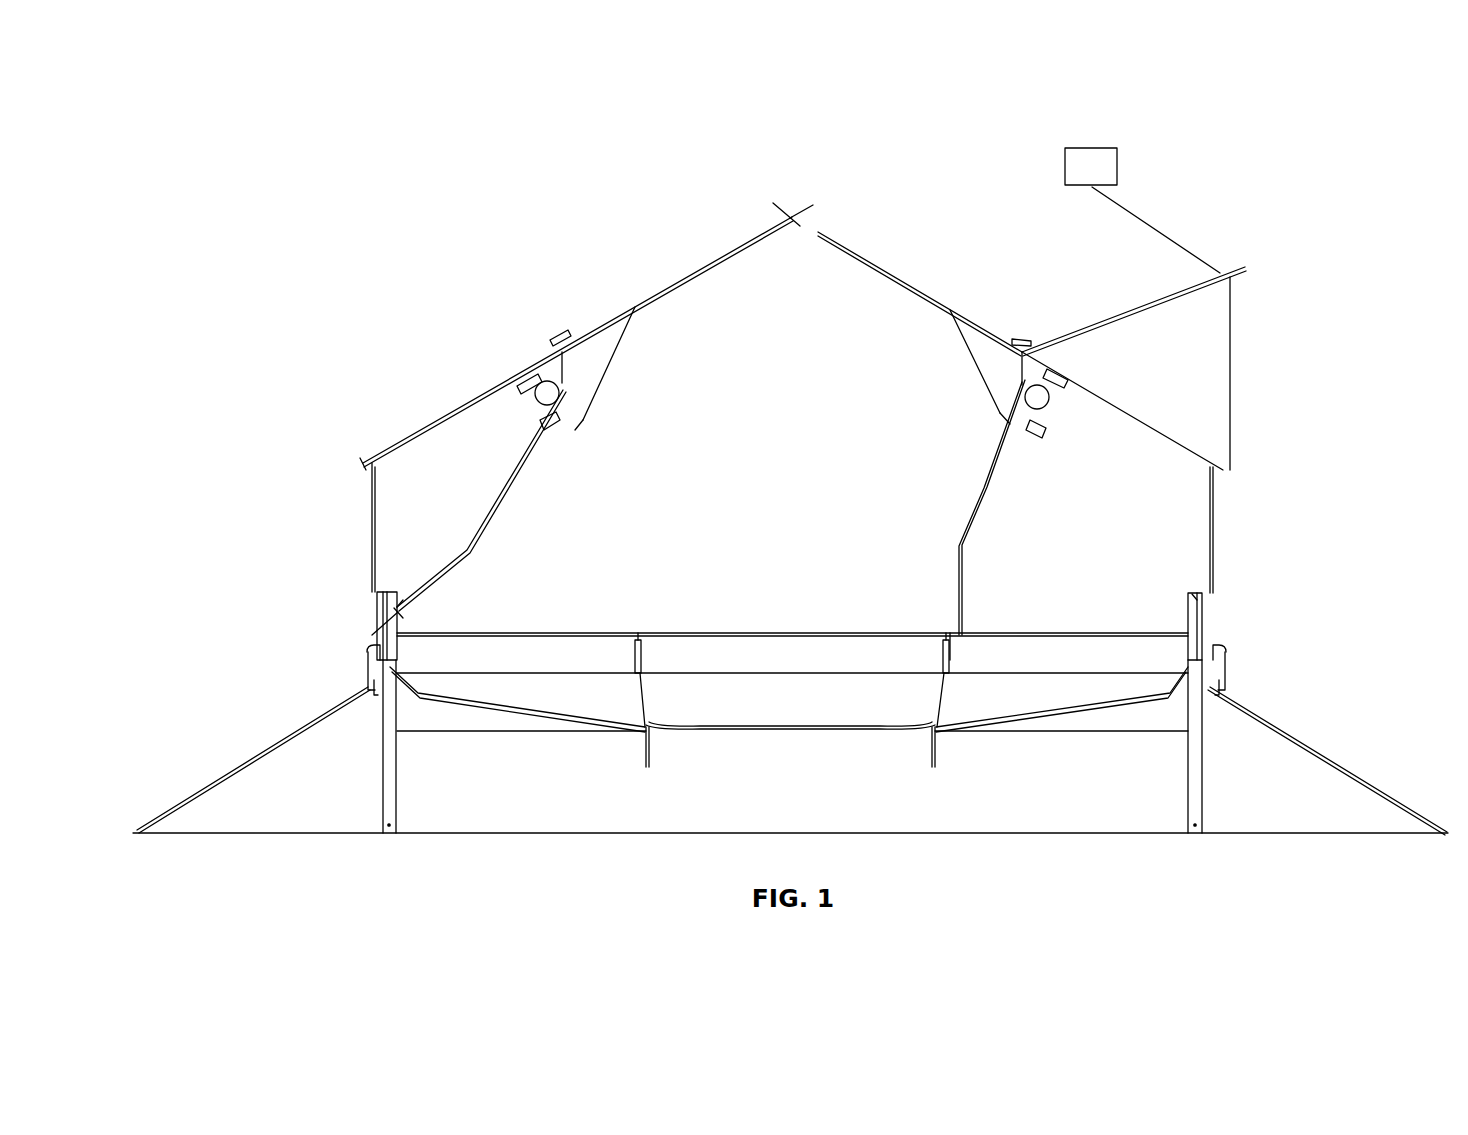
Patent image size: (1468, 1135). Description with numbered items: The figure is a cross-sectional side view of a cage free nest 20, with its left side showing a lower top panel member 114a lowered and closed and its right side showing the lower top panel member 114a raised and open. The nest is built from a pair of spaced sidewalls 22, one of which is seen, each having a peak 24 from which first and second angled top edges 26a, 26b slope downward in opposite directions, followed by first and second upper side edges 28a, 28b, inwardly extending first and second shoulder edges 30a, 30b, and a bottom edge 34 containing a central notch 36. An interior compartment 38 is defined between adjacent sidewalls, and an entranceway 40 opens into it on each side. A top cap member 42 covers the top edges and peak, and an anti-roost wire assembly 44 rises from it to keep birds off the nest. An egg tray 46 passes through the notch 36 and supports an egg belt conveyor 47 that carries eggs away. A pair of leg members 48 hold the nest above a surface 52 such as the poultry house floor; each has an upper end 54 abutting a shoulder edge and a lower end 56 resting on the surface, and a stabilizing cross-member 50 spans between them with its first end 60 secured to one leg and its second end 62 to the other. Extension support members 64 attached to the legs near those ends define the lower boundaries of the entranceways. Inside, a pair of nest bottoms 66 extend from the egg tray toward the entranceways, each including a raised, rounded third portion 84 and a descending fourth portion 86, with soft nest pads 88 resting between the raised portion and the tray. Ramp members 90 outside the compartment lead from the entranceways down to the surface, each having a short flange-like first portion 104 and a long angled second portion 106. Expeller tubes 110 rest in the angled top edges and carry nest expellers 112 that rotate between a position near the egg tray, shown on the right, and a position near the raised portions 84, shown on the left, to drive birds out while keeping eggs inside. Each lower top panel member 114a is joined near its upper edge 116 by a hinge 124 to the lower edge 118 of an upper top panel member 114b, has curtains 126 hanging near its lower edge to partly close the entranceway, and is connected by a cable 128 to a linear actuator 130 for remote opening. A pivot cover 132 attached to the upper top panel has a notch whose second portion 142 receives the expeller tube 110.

The cage free nest 20 is at (628, 184).
The sidewall 22 is at (770, 445).
The peak 24 is at (806, 228).
The first angled top edge 26a is at (722, 280).
The second angled top edge 26b is at (1120, 405).
The first upper side edge 28a is at (370, 530).
The second upper side edge 28b is at (1215, 520).
The first shoulder edge 30a is at (372, 600).
The second shoulder edge 30b is at (1215, 605).
The bottom edge 34 is at (520, 735).
The notch 36 is at (732, 712).
The interior compartment 38 is at (770, 573).
The entranceway 40 is at (377, 622).
The top cap member 42 is at (818, 228).
The anti-roost wire assembly 44 is at (798, 213).
The egg tray 46 is at (650, 748).
The egg belt conveyor 47 is at (778, 726).
The leg member 48 is at (384, 760).
The stabilizing cross-member 50 is at (519, 662).
The surface 52 is at (240, 836).
The upper end 54 is at (400, 588).
The lower end 56 is at (390, 836).
The first end 60 is at (400, 640).
The second end 62 is at (1190, 645).
The extension support member 64 is at (397, 680).
The nest bottom 66 is at (490, 708).
The third portion 84 is at (370, 652).
The fourth portion 86 is at (365, 672).
The nest pad 88 is at (578, 710).
The ramp member 90 is at (228, 766).
The first portion 104 is at (365, 695).
The second portion 106 is at (262, 755).
The expeller tube 110 is at (536, 398).
The nest expeller 112 is at (500, 522).
The lower top panel member 114a is at (455, 408).
The upper top panel member 114b is at (650, 292).
The upper edge 116 is at (776, 212).
The lower edge 118 is at (356, 455).
The hinge 124 is at (555, 338).
The curtain 126 is at (1232, 360).
The cable 128 is at (1162, 228).
The linear actuator 130 is at (1092, 152).
The pivot cover 132 is at (610, 341).
The second portion 142 is at (545, 432).